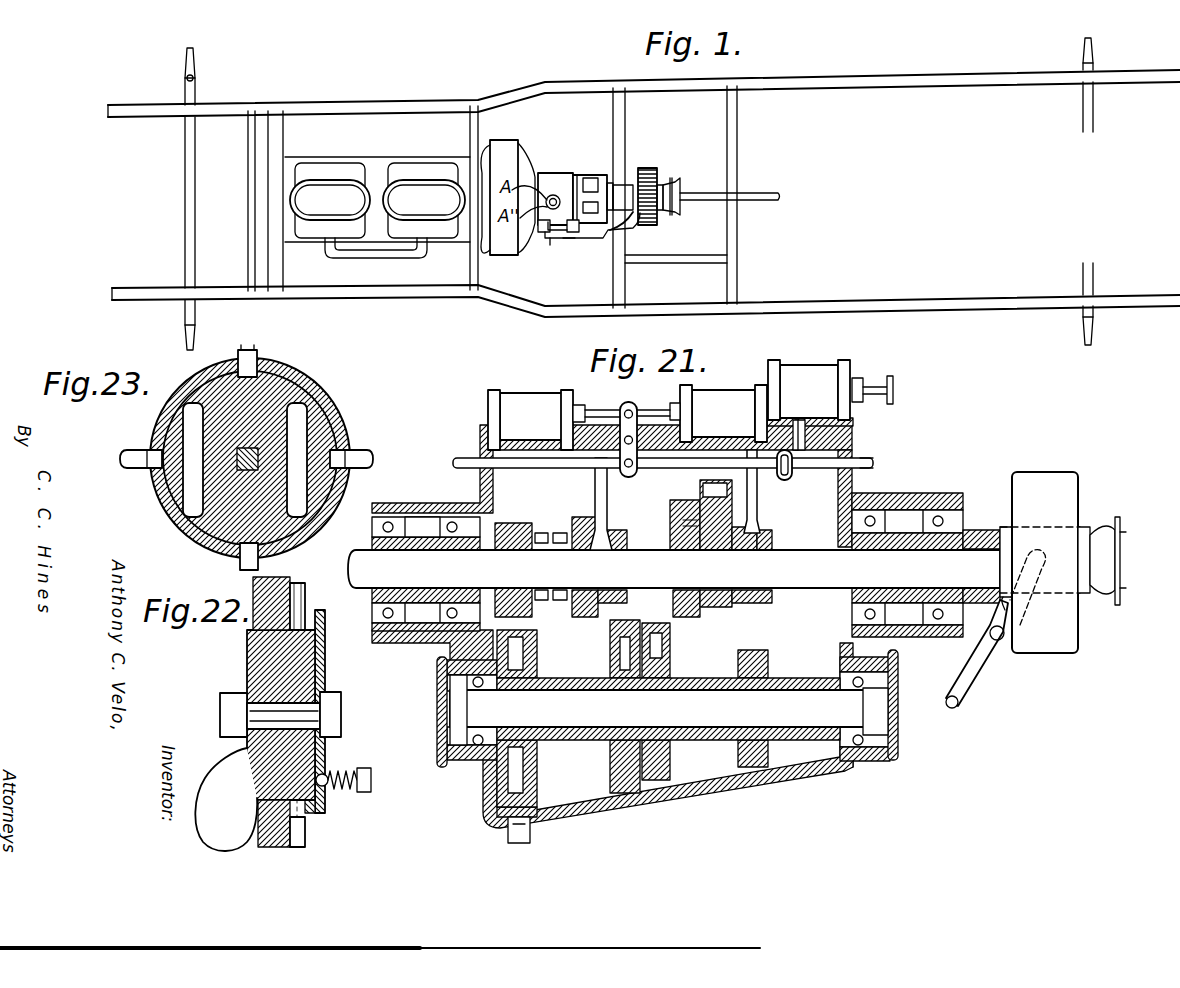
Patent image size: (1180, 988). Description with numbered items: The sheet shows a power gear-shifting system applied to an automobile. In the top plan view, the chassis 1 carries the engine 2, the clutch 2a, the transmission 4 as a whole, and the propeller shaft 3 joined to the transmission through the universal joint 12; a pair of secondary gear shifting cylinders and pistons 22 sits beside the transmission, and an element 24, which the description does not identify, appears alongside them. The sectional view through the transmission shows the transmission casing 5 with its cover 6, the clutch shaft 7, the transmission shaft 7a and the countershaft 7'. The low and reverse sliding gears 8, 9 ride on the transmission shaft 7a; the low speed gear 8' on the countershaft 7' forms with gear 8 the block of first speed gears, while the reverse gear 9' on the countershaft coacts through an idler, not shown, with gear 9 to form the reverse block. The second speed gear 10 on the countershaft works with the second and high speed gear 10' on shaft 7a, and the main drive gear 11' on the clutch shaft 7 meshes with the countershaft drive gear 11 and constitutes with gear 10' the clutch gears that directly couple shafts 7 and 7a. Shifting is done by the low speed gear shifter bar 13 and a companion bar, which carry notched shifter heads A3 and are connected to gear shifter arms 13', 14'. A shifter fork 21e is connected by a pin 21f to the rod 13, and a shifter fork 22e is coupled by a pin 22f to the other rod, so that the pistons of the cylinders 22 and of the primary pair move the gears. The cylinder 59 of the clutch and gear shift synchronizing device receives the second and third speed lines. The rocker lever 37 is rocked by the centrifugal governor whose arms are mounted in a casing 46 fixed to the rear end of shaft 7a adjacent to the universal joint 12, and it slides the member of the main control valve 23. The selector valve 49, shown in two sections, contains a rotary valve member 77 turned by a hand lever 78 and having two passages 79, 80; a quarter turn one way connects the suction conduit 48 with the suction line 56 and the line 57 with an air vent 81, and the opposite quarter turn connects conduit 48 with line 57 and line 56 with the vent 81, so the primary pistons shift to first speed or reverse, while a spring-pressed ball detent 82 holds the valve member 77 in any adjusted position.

In FIG. 1, the chassis 1 is at (432, 103).
In FIG. 1, the automobile engine 2 is at (383, 162).
In FIG. 1, the clutch 2a is at (503, 147).
In FIG. 1, the propeller shaft 3 is at (772, 192).
In FIG. 1, the transmission 4 is at (550, 173).
In FIG. 21, the transmission casing 5 is at (480, 483).
In FIG. 1, the cover 6 is at (575, 176).
In FIG. 21, the cover 6 is at (852, 428).
In FIG. 21, the clutch shaft 7 is at (674, 560).
In FIG. 21, the transmission shaft 7a is at (650, 550).
In FIG. 21, the countershaft 7' is at (669, 724).
In FIG. 21, the low sliding gear 8 is at (708, 548).
In FIG. 21, the low speed gear 8' is at (656, 698).
In FIG. 21, the reverse sliding gear 9 is at (769, 514).
In FIG. 21, the reverse gear 9' is at (768, 707).
In FIG. 21, the second or intermediate speed gear 10 is at (610, 706).
In FIG. 21, the second and high speed gear 10' is at (566, 557).
In FIG. 21, the countershaft drive gear 11 is at (530, 718).
In FIG. 21, the main drive gear 11' is at (513, 559).
In FIG. 1, the universal joint 12 is at (675, 188).
In FIG. 21, the universal joint 12 is at (1105, 527).
In FIG. 21, the low speed gear shifter bar 13 is at (886, 462).
In FIG. 21, the gear shifter arm 13' is at (768, 491).
In FIG. 21, the gear shifter arm 14' is at (587, 504).
In FIG. 21, the shifter fork or arm 21e is at (792, 473).
In FIG. 21, the pin 21f is at (787, 447).
In FIG. 1, the secondary gear shifting cylinders and pistons 22 is at (547, 233).
In FIG. 21, the secondary gear shifting cylinders and pistons 22 is at (517, 395).
In FIG. 21, the shifter fork or arm 22e is at (640, 418).
In FIG. 21, the pin 22f is at (637, 477).
In FIG. 22, the main control valve 23 is at (309, 581).
In FIG. 1, the wiring 24 is at (562, 248).
In FIG. 1, the rocker lever 37 is at (632, 227).
In FIG. 21, the rocker lever 37 is at (978, 663).
In FIG. 21, the governor casing 46 is at (1047, 473).
In FIG. 23, the suction conduit 48 is at (239, 558).
In FIG. 22, the suction conduit 48 is at (305, 827).
In FIG. 23, the low speed and reverse selector valve 49 is at (333, 418).
In FIG. 22, the low speed and reverse selector valve 49 is at (323, 663).
In FIG. 23, the suction line 56 is at (137, 452).
In FIG. 23, the suction line 57 is at (360, 455).
In FIG. 21, the cylinder 59 is at (793, 368).
In FIG. 23, the rotary valve member 77 is at (232, 360).
In FIG. 22, the rotary valve member 77 is at (270, 683).
In FIG. 22, the hand lever 78 is at (222, 787).
In FIG. 23, the port or passage 79 is at (160, 472).
In FIG. 23, the port or passage 80 is at (318, 398).
In FIG. 23, the air vent 81 is at (257, 355).
In FIG. 22, the air vent 81 is at (305, 603).
In FIG. 22, the spring-pressed ball detent 82 is at (329, 773).
In FIG. 21, the notched shifter heads A3 is at (597, 497).